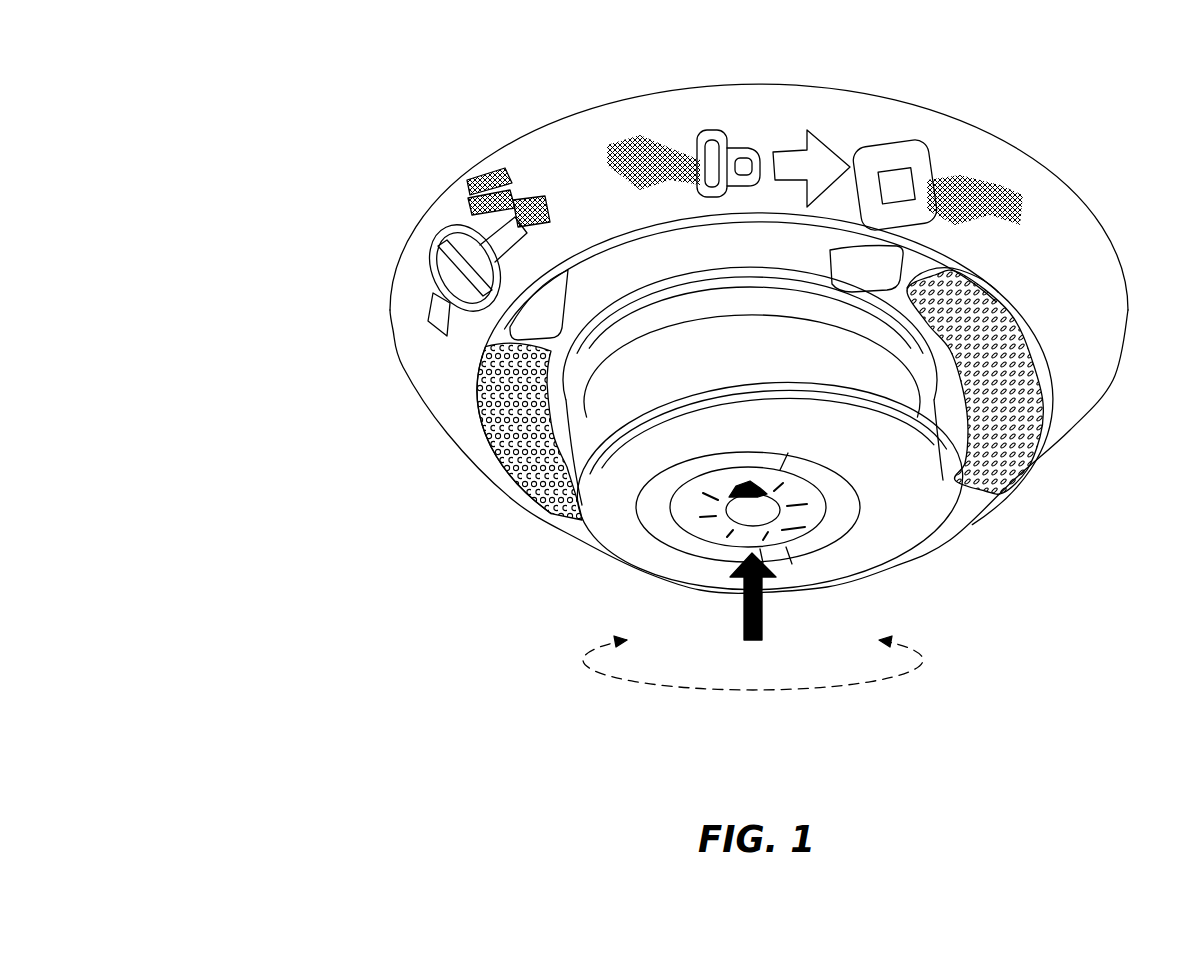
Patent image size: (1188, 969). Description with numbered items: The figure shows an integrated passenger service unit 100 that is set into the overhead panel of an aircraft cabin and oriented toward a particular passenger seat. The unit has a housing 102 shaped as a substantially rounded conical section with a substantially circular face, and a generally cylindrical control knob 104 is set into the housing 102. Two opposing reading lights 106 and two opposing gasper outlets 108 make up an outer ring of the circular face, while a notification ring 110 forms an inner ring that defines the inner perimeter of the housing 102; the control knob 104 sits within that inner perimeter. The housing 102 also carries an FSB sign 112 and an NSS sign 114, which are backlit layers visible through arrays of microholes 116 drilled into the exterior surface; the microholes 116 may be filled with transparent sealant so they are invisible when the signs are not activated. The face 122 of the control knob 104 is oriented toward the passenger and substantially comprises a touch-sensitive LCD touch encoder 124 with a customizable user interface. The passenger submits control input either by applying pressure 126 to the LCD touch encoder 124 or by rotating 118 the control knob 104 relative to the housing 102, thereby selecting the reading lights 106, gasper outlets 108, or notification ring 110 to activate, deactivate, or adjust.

The integrated passenger service unit 100 is at (228, 112).
The housing 102 is at (1109, 338).
The control knob 104 is at (893, 397).
The reading lights 106 is at (610, 270).
The gasper outlets 108 is at (1010, 403).
The notification ring 110 is at (937, 390).
The FSB sign 112 is at (893, 85).
The NSS sign 114 is at (413, 216).
The microholes 116 is at (640, 130).
The rotating 118 is at (881, 681).
The face 122 is at (610, 497).
The LCD touch encoder 124 is at (756, 513).
The pressure 126 is at (764, 617).